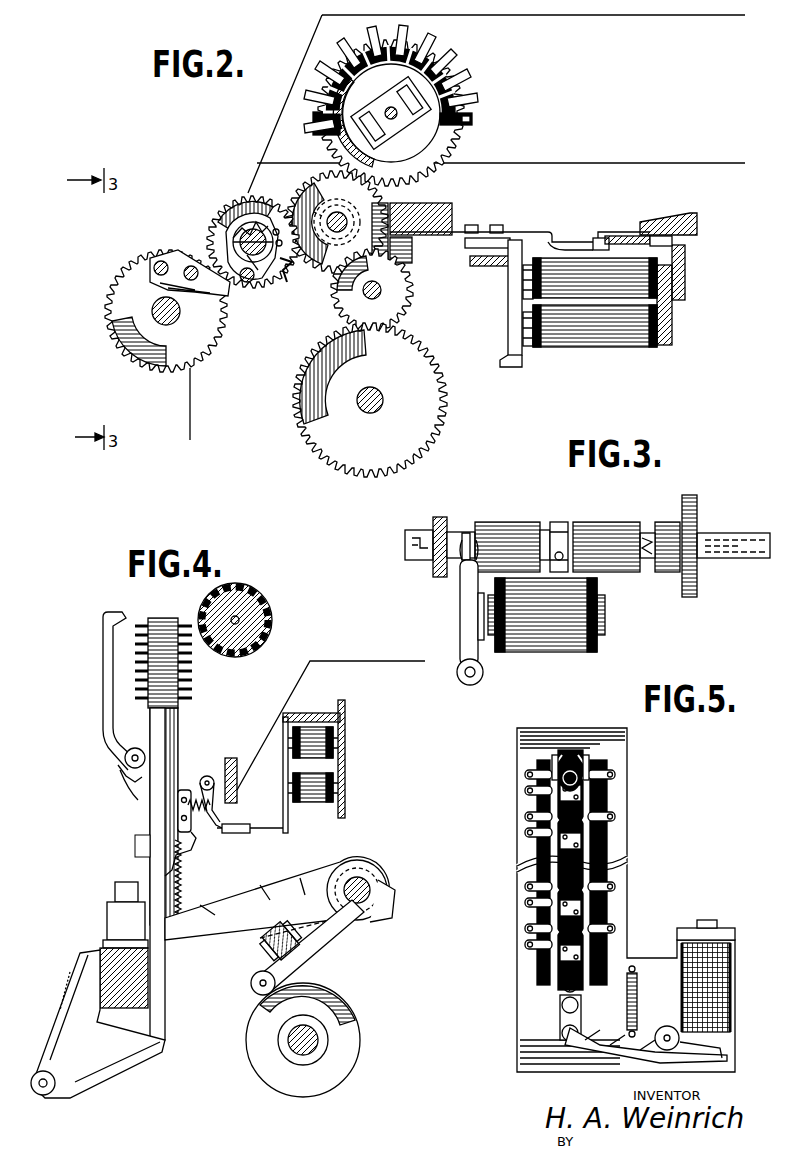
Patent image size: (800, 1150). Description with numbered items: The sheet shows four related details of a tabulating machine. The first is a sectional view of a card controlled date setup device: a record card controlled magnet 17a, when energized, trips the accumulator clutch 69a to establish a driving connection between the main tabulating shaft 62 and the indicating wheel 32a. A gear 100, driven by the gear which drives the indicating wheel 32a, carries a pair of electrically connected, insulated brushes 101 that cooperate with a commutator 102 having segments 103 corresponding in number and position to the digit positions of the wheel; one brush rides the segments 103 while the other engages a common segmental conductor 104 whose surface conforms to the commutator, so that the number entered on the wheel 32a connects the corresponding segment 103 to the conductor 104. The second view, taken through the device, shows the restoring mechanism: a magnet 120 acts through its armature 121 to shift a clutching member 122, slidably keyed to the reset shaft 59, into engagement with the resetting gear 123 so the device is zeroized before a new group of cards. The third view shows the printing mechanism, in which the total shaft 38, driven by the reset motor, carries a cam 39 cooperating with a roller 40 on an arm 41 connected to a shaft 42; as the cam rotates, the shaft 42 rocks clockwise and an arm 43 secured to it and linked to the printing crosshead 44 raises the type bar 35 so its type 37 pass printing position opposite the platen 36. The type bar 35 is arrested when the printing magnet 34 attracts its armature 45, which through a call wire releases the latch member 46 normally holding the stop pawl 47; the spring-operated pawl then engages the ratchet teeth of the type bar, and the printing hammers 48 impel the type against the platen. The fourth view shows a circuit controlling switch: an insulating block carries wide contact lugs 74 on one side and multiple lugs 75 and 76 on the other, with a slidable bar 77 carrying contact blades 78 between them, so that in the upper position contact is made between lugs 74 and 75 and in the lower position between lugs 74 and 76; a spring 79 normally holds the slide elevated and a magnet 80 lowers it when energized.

In FIG. 2, the gear 100 is at (412, 109).
In FIG. 2, the brushes 101 is at (436, 93).
In FIG. 2, the commutator 102 is at (474, 115).
In FIG. 2, the segments 103 is at (468, 90).
In FIG. 2, the common segmental conductor 104 is at (455, 146).
In FIG. 2, the accumulator clutch 69a is at (284, 196).
In FIG. 2, the indicating wheel 32a is at (282, 258).
In FIG. 2, the resetting gear 123 is at (175, 352).
In FIG. 3, the resetting gear 123 is at (692, 500).
In FIG. 2, the reset shaft 59 is at (170, 300).
In FIG. 3, the reset shaft 59 is at (728, 540).
In FIG. 2, the main tabulating shaft 62 is at (392, 402).
In FIG. 2, the record card controlled magnet 17a is at (575, 275).
In FIG. 3, the magnet 120 is at (553, 652).
In FIG. 3, the armature 121 is at (467, 601).
In FIG. 3, the clutching member 122 is at (597, 530).
In FIG. 4, the printing magnet 34 is at (340, 738).
In FIG. 4, the type bar 35 is at (155, 803).
In FIG. 4, the platen 36 is at (272, 612).
In FIG. 4, the type 37 is at (193, 684).
In FIG. 4, the total shaft 38 is at (307, 1007).
In FIG. 4, the cam 39 is at (352, 1040).
In FIG. 4, the roller 40 is at (257, 990).
In FIG. 4, the arm 41 is at (330, 935).
In FIG. 4, the shaft 42 is at (362, 885).
In FIG. 4, the arm 43 is at (289, 872).
In FIG. 4, the printing crosshead 44 is at (117, 958).
In FIG. 4, the armature 45 is at (288, 742).
In FIG. 4, the latch member 46 is at (230, 808).
In FIG. 4, the stop pawl 47 is at (180, 826).
In FIG. 4, the printing hammers 48 is at (103, 660).
In FIG. 5, the contact lugs 74 is at (615, 822).
In FIG. 5, the multiple lugs 75 is at (527, 815).
In FIG. 5, the multiple lugs 76 is at (527, 833).
In FIG. 5, the slidable bar 77 is at (575, 755).
In FIG. 5, the contact blades 78 is at (592, 768).
In FIG. 5, the spring 79 is at (637, 1003).
In FIG. 5, the magnet 80 is at (715, 998).